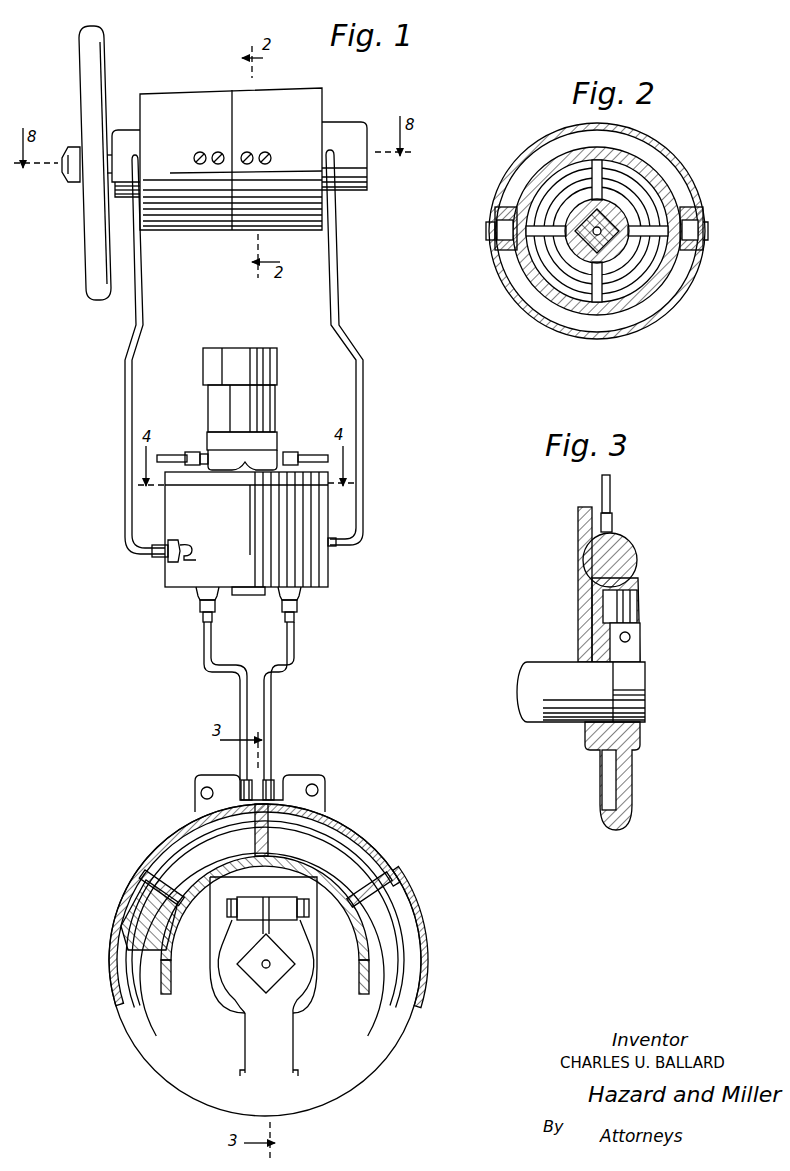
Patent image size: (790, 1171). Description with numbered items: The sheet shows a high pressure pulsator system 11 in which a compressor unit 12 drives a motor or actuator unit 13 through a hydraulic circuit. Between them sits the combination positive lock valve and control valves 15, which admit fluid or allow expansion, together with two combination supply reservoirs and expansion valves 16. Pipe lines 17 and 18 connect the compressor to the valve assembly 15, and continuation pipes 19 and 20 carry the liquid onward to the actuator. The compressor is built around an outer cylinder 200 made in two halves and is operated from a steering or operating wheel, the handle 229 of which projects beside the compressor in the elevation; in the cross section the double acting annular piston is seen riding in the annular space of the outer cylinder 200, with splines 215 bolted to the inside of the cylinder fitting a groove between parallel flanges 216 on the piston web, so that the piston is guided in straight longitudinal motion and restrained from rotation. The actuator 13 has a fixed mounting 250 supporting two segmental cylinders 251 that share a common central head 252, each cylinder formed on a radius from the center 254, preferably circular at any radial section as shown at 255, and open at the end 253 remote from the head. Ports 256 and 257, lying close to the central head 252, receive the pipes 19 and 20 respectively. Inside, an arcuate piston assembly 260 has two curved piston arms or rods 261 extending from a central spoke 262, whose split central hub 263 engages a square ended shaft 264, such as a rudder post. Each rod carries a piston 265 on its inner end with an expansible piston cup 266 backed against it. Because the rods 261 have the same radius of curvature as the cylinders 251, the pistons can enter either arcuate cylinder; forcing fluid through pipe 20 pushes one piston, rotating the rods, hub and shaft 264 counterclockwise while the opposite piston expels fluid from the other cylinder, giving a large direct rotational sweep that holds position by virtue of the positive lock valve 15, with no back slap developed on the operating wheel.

In FIG. 1, the high pressure pulsator system 11 is at (219, 352).
In FIG. 1, the compressor unit 12 is at (170, 88).
In FIG. 2, the compressor unit 12 is at (520, 146).
In FIG. 1, the motor or actuator unit 13 is at (152, 832).
In FIG. 3, the motor or actuator unit 13 is at (595, 568).
In FIG. 1, the combination positive lock valve and control valves 15 is at (163, 566).
In FIG. 1, the combination supply reservoir and expansion valve 16 is at (278, 396).
In FIG. 1, the pipe line 17 is at (124, 376).
In FIG. 1, the pipe line 18 is at (356, 368).
In FIG. 1, the continuation pipe 19 is at (224, 682).
In FIG. 1, the continuation pipe 20 is at (289, 701).
In FIG. 2, the outer cylinder 200 is at (490, 268).
In FIG. 2, the spline 215 is at (703, 220).
In FIG. 2, the parallel flange 216 is at (696, 250).
In FIG. 1, the handle 229 is at (82, 62).
In FIG. 1, the fixed mounting 250 is at (302, 786).
In FIG. 1, the segmental cylinder 251 is at (342, 810).
In FIG. 1, the central head 252 is at (270, 844).
In FIG. 1, the open end 253 is at (416, 1002).
In FIG. 1, the center 254 is at (278, 960).
In FIG. 3, the circular radial section 255 is at (620, 552).
In FIG. 1, the port 256 is at (240, 784).
In FIG. 1, the port 257 is at (270, 778).
In FIG. 1, the arcuate piston assembly 260 is at (282, 1084).
In FIG. 1, the curved piston arm or rod 261 is at (372, 1036).
In FIG. 1, the central spoke 262 is at (272, 1040).
In FIG. 1, the central hub 263 is at (226, 996).
In FIG. 1, the shaft 264 is at (276, 968).
In FIG. 3, the shaft 264 is at (562, 668).
In FIG. 1, the piston 265 is at (398, 880).
In FIG. 1, the expansible piston cup 266 is at (138, 876).